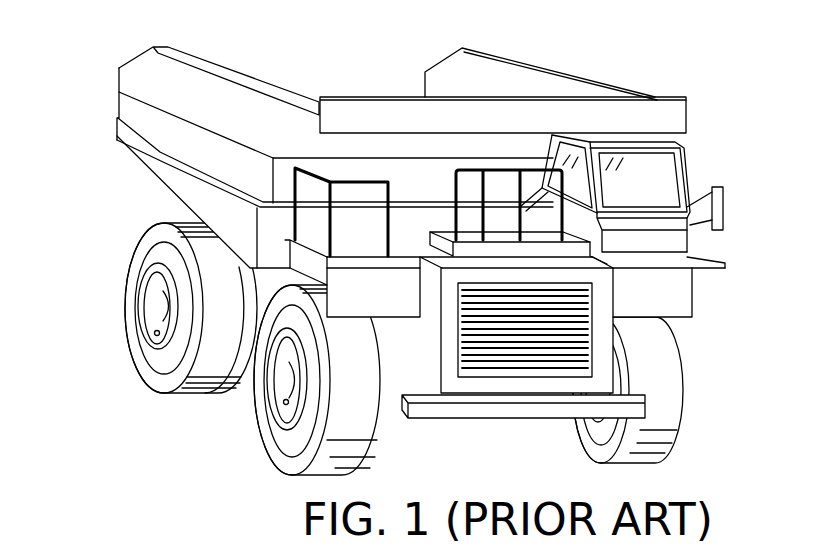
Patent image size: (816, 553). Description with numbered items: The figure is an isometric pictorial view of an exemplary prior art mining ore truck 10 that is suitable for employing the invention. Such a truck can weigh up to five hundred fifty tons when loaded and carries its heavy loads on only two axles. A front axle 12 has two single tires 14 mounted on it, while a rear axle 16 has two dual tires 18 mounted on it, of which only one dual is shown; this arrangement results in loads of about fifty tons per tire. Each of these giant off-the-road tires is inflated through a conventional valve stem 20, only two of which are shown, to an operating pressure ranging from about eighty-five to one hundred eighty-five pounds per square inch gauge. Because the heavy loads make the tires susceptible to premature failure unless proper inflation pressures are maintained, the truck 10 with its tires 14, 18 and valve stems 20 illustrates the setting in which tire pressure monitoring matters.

The mining ore truck 10 is at (587, 62).
The front axle 12 is at (283, 383).
The single tires 14 is at (367, 428).
The rear axle 16 is at (160, 307).
The dual tires 18 is at (235, 345).
The valve stem 20 is at (154, 344).